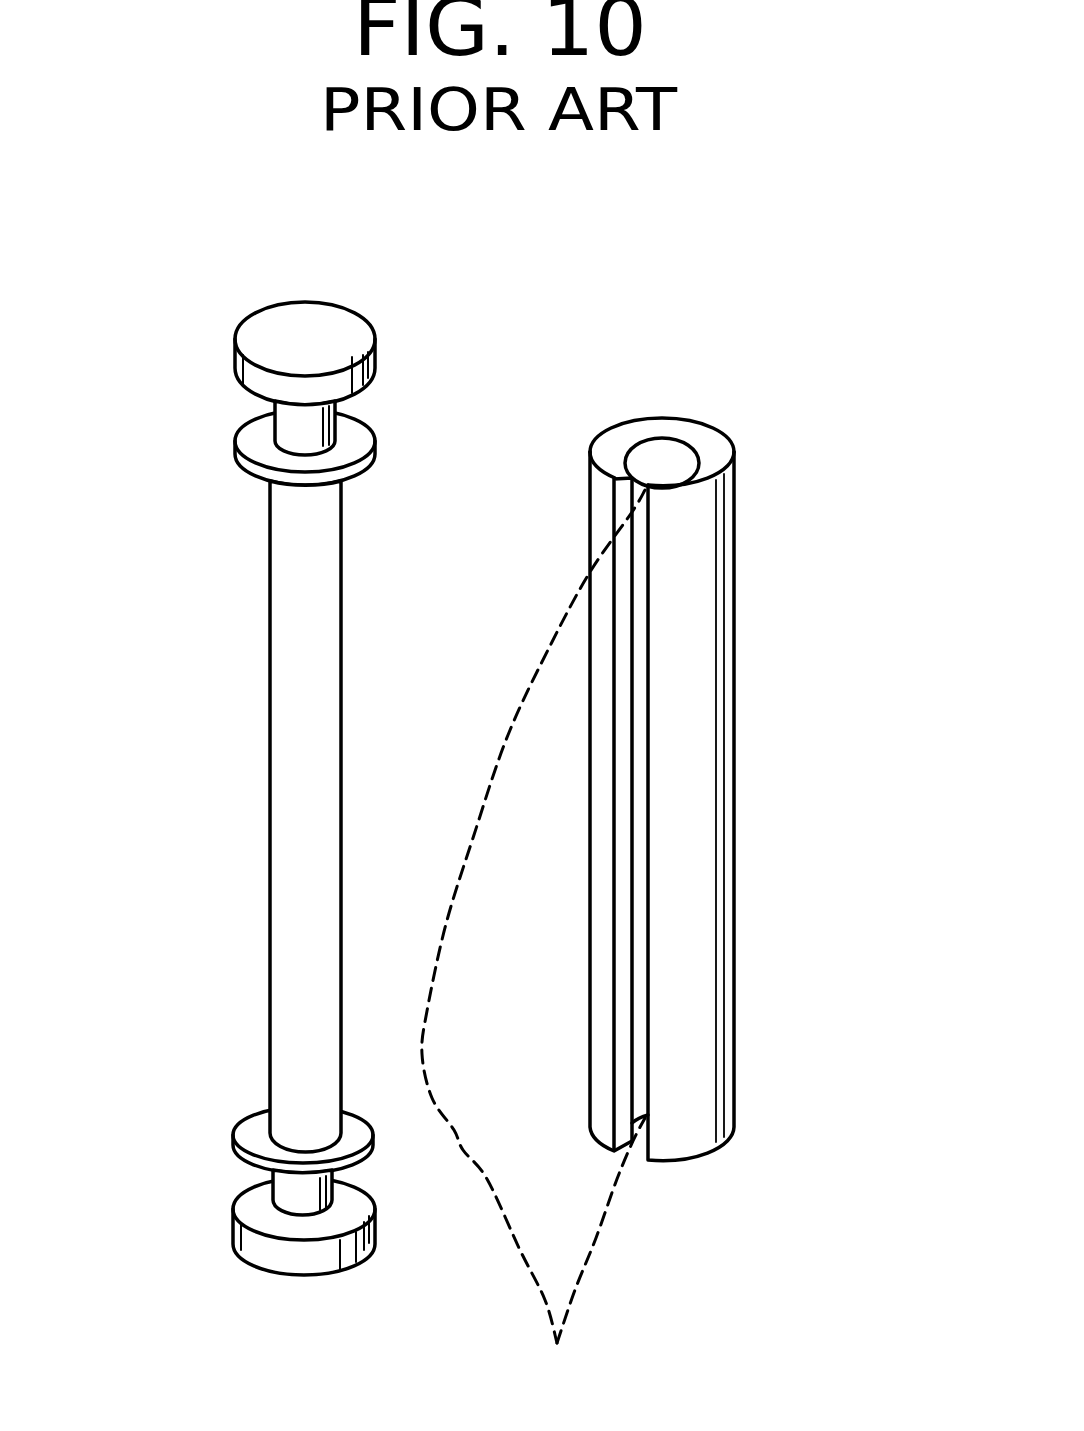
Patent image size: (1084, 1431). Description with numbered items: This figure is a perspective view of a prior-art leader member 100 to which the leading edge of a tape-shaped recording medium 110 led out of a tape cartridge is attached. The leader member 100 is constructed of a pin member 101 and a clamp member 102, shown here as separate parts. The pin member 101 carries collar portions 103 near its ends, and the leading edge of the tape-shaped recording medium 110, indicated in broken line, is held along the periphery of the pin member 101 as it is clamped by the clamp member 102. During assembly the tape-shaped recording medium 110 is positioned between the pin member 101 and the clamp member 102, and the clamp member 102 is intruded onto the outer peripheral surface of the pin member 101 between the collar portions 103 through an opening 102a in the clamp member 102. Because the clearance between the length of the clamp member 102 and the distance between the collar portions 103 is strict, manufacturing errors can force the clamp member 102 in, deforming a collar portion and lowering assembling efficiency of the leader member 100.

The leader member 100 is at (501, 788).
The pin member 101 is at (270, 937).
The clamp member 102 is at (501, 788).
The opening 102a is at (642, 565).
The collar portions 103 is at (240, 449).
The tape-shaped recording medium 110 is at (583, 1258).